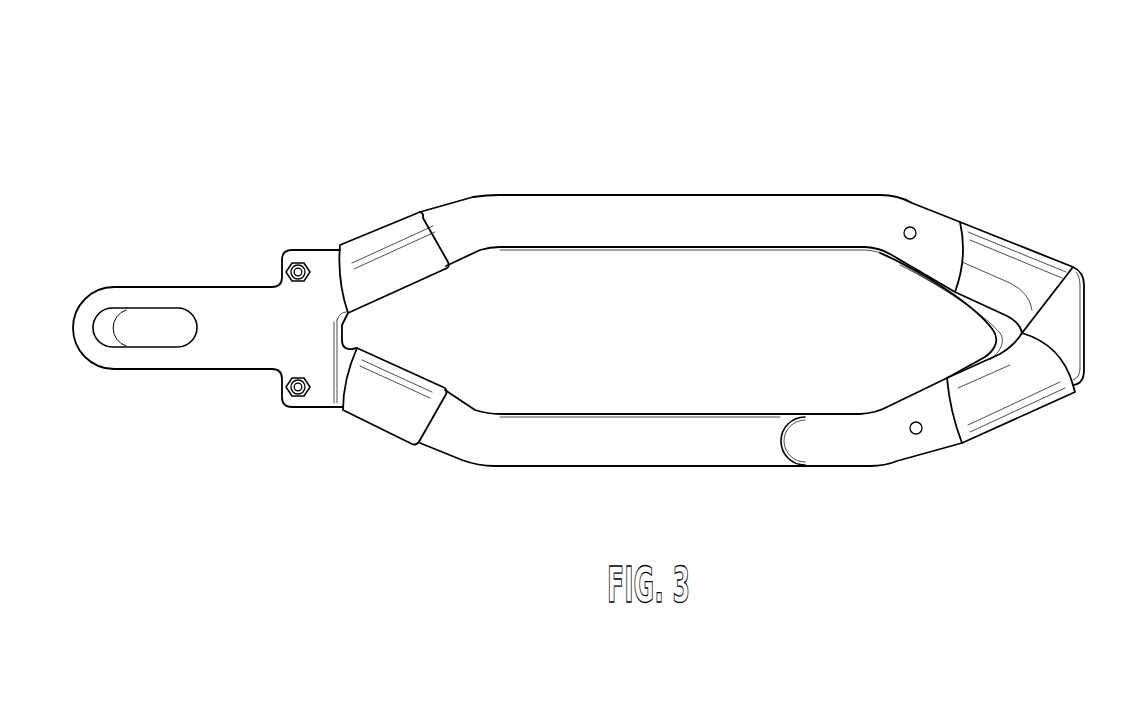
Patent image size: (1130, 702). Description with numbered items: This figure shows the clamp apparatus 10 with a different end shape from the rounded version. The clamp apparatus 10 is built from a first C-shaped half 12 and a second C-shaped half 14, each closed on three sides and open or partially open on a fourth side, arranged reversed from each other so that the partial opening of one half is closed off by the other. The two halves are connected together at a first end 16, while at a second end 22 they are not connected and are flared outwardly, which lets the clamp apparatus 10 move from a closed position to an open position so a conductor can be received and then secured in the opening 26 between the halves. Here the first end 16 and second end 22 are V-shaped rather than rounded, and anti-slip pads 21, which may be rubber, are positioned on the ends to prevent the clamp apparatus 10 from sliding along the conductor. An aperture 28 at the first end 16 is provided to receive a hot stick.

The clamp apparatus 10 is at (918, 77).
The first C-shaped half 12 is at (580, 217).
The second C-shaped half 14 is at (598, 445).
The first end 16 is at (293, 360).
The anti-slip pads 21 is at (1018, 248).
The second end 22 is at (1063, 320).
The opening 26 is at (622, 278).
The aperture 28 is at (152, 302).